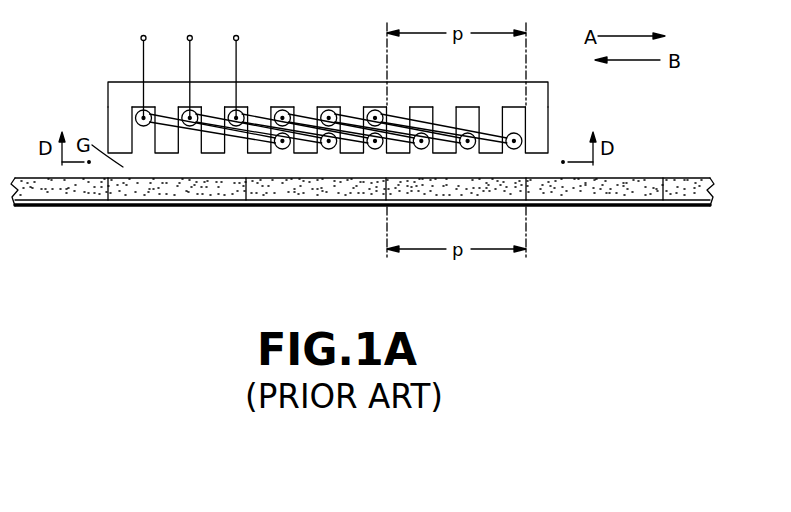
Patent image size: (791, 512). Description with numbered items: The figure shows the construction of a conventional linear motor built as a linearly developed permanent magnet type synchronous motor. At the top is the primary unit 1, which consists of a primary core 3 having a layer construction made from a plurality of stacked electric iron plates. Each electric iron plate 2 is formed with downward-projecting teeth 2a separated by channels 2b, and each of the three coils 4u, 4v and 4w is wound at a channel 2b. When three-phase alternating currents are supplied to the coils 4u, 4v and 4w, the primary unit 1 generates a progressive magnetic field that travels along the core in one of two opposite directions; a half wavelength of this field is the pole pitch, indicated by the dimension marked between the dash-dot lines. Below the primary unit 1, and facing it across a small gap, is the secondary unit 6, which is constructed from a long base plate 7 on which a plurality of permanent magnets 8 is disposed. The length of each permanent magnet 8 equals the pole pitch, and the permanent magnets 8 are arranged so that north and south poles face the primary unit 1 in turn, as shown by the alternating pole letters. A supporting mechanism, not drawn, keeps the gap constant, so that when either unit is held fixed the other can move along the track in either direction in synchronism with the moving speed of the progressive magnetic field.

The primary unit 1 is at (115, 75).
The electric iron plate 2 is at (543, 97).
The teeth 2a is at (117, 145).
The channels 2b is at (145, 148).
The primary core 3 is at (543, 82).
The coil 4u is at (258, 134).
The coil 4v is at (308, 134).
The coil 4w is at (353, 137).
The secondary unit 6 is at (686, 209).
The base plate 7 is at (661, 206).
The permanent magnets 8 is at (645, 186).